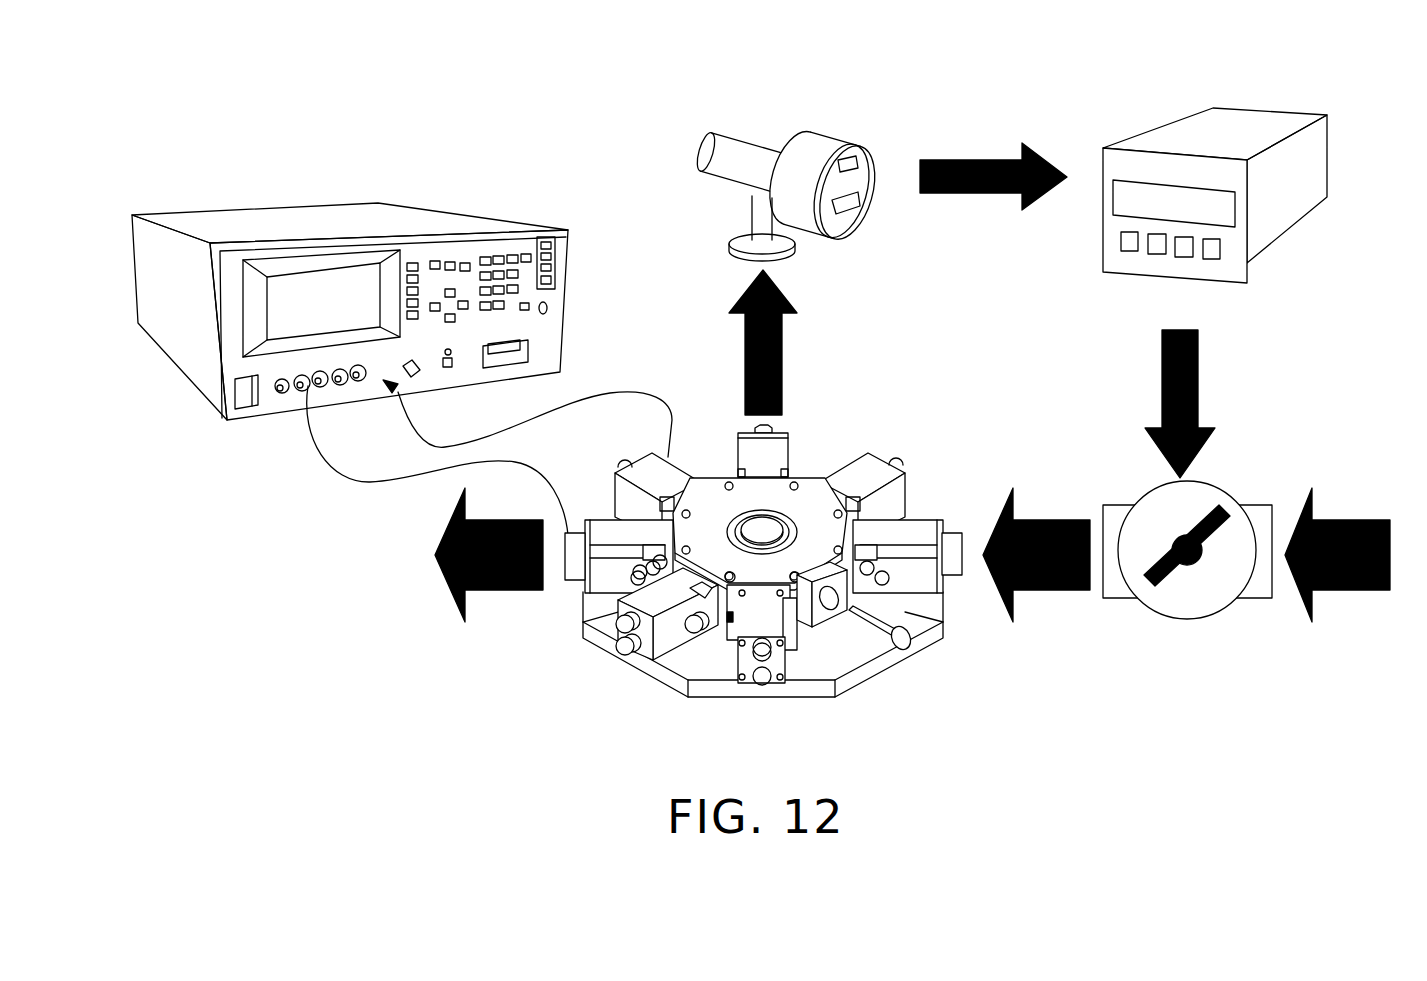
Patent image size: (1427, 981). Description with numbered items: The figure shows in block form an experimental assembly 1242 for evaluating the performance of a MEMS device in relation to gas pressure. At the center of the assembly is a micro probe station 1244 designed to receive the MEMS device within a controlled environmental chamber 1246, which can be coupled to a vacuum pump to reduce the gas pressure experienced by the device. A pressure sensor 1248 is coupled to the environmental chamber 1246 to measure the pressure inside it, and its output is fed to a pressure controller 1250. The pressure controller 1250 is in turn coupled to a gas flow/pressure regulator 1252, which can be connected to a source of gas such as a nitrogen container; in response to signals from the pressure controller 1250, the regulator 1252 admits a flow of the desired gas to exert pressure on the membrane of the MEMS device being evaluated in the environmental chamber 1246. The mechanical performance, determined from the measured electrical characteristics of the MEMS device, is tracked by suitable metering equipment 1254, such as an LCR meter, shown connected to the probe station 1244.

The experimental assembly 1242 is at (400, 620).
The micro probe station 1244 is at (610, 647).
The environmental chamber 1246 is at (772, 518).
The pressure sensor 1248 is at (837, 143).
The pressure controller 1250 is at (1310, 167).
The gas flow/pressure regulator 1252 is at (1257, 513).
The metering equipment 1254 is at (547, 238).